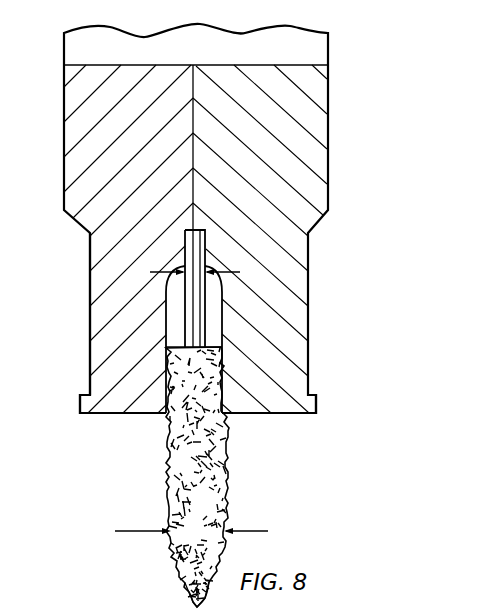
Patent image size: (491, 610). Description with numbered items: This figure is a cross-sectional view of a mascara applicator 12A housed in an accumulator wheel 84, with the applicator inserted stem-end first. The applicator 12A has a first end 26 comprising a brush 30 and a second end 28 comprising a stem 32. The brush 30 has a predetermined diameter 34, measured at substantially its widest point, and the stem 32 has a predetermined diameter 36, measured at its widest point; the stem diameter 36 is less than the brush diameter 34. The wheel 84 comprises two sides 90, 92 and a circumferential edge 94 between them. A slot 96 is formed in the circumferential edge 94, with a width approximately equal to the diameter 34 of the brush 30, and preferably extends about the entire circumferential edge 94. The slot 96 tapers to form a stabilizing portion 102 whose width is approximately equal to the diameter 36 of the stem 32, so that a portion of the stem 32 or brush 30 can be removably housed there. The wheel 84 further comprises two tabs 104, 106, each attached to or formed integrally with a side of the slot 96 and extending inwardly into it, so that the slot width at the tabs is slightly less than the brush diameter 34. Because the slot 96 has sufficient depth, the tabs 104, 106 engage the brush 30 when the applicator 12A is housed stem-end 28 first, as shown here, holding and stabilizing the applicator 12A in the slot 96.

The mascara applicator 12A is at (226, 350).
The first end 26 is at (182, 589).
The second end 28 is at (213, 240).
The brush 30 is at (170, 505).
The stem 32 is at (185, 294).
The brush diameter 34 is at (248, 530).
The stem diameter 36 is at (182, 257).
The wheel 84 is at (64, 58).
The side 90 is at (90, 348).
The side 92 is at (286, 156).
The circumferential edge 94 is at (92, 413).
The slot 96 is at (215, 302).
The stabilizing portion 102 is at (210, 226).
The tab 104 is at (166, 412).
The tab 106 is at (224, 412).